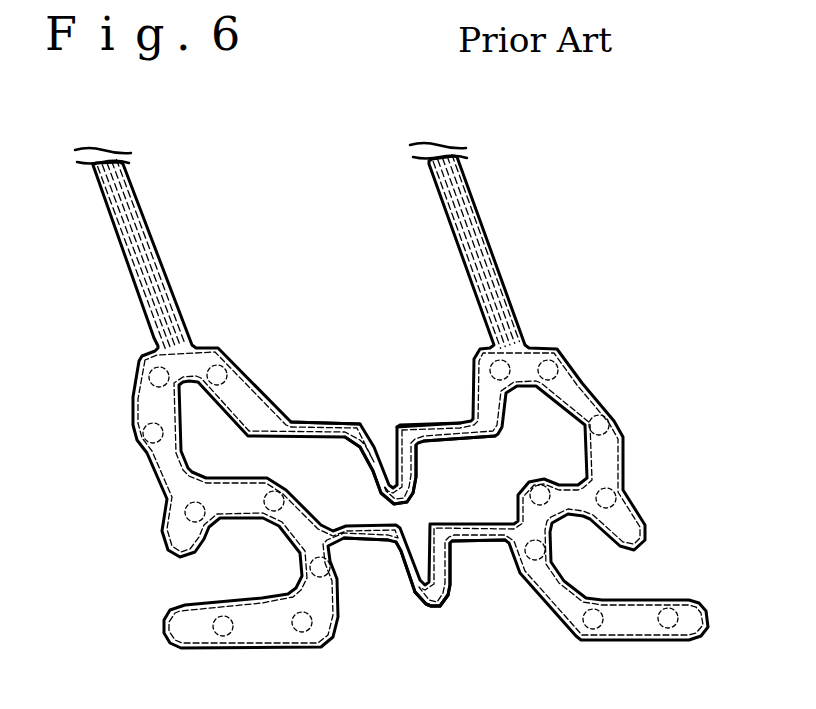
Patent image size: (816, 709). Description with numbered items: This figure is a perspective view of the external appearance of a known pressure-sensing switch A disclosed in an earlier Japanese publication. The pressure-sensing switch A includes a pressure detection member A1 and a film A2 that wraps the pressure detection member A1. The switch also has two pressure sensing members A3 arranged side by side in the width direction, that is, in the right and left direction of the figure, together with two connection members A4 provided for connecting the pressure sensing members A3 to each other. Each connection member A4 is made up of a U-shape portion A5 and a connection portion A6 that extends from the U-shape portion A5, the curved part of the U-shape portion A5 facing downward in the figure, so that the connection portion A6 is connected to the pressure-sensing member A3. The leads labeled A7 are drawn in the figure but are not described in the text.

The pressure-sensing switch A is at (562, 191).
The pressure detection member A1 is at (590, 627).
The film A2 is at (663, 637).
The pressure sensing member A3 is at (172, 570).
The connection member A4 is at (405, 409).
The U-shape portion A5 is at (382, 470).
The connection portion A6 is at (320, 423).
The outer lead A7 is at (157, 295).